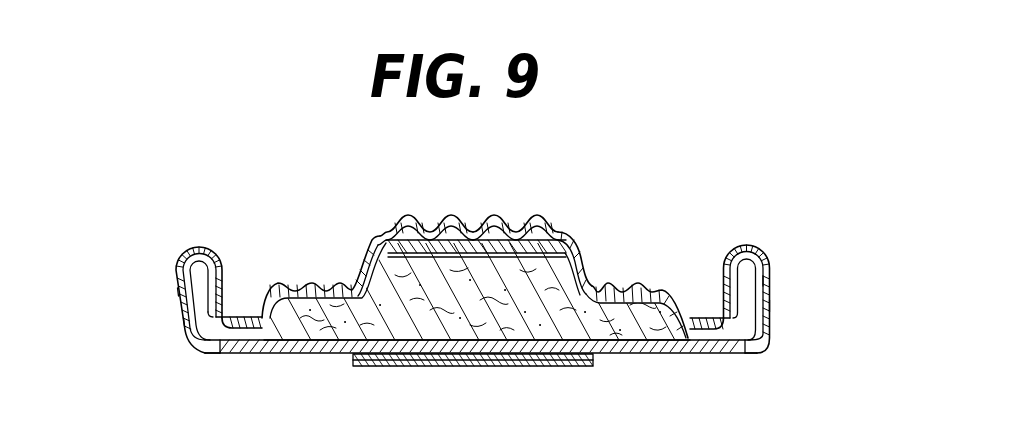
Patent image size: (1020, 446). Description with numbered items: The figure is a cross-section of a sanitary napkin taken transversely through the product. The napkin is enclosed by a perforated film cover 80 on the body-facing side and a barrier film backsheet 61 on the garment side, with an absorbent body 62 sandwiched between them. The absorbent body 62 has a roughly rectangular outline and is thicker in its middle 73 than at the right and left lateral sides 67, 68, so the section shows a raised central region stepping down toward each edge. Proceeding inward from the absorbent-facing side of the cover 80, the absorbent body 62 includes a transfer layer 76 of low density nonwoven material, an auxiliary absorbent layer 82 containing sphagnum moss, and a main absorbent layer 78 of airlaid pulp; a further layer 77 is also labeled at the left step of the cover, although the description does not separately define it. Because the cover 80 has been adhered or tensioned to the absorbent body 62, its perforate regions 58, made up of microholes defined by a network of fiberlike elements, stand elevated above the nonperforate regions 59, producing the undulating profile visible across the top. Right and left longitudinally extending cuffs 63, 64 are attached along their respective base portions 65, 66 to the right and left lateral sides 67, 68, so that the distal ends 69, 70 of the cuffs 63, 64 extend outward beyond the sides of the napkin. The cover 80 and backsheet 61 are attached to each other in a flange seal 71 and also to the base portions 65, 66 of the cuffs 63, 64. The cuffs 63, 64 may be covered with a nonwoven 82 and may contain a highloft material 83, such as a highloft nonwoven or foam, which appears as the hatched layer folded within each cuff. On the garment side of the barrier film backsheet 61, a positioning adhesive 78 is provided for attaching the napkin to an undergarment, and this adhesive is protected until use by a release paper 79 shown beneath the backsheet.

The perforate regions 58 is at (450, 236).
The nonperforate regions 59 is at (557, 233).
The barrier film backsheet 61 is at (617, 343).
The absorbent body 62 is at (407, 296).
The right cuff 63 is at (770, 263).
The left cuff 64 is at (176, 263).
The base portion of right cuff 65 is at (699, 326).
The base portion of left cuff 66 is at (240, 317).
The right lateral side 67 is at (686, 350).
The left lateral side 68 is at (258, 357).
The distal end of right cuff 69 is at (742, 246).
The distal end of left cuff 70 is at (198, 247).
The flange seal 71 is at (212, 357).
The middle of absorbent body 73 is at (477, 362).
The transfer layer 76 is at (557, 214).
The cover layer at left step 77 is at (376, 236).
The positioning adhesive 78 is at (380, 367).
The release paper 79 is at (422, 368).
The perforated film cover 80 is at (580, 257).
The nonwoven 82 is at (177, 290).
The highloft material 83 is at (183, 322).